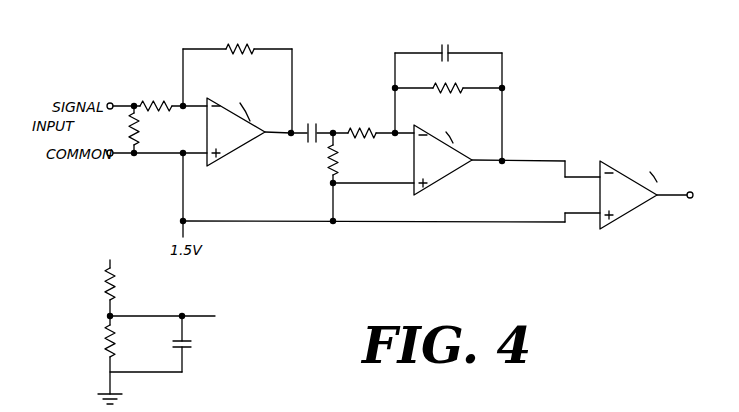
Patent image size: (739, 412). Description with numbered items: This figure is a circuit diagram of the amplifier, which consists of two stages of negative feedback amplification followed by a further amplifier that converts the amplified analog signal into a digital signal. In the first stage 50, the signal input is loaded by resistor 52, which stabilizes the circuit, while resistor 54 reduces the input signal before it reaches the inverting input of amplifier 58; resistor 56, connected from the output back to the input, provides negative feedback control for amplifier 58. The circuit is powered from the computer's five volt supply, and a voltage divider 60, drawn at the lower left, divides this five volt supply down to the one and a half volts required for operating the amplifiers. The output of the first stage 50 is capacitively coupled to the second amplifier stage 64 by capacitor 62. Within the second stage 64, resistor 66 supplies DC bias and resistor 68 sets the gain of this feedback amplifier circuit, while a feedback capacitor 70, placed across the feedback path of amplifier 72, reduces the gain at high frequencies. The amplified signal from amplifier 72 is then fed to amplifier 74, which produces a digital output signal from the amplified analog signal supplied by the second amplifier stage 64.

The first stage 50 is at (196, 94).
The resistor 52 is at (128, 127).
The resistor 54 is at (151, 96).
The resistor 56 is at (237, 45).
The amplifier 58 is at (228, 144).
The voltage divider 60 is at (90, 305).
The capacitor 62 is at (310, 145).
The second amplifier stage 64 is at (476, 107).
The resistor 66 is at (325, 172).
The resistor 68 is at (356, 142).
The feedback capacitor 70 is at (443, 43).
The amplifier 72 is at (437, 161).
The amplifier 74 is at (628, 201).